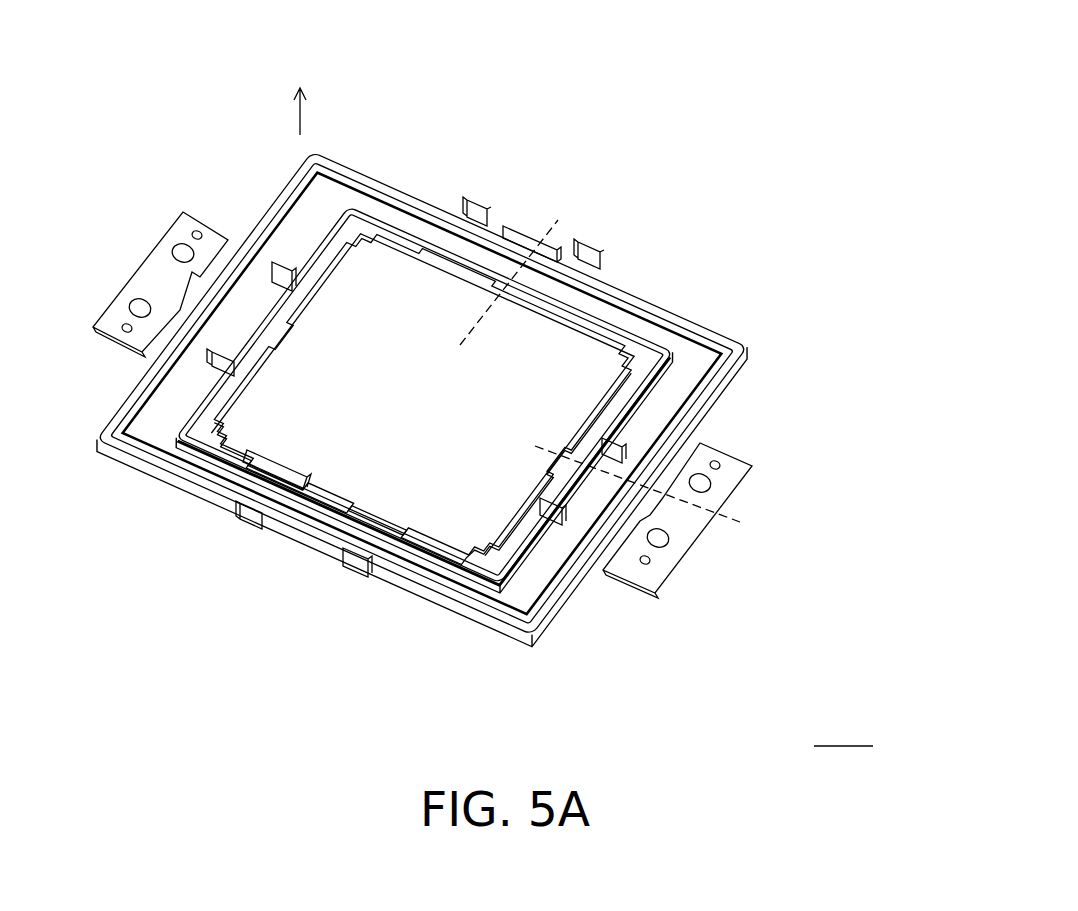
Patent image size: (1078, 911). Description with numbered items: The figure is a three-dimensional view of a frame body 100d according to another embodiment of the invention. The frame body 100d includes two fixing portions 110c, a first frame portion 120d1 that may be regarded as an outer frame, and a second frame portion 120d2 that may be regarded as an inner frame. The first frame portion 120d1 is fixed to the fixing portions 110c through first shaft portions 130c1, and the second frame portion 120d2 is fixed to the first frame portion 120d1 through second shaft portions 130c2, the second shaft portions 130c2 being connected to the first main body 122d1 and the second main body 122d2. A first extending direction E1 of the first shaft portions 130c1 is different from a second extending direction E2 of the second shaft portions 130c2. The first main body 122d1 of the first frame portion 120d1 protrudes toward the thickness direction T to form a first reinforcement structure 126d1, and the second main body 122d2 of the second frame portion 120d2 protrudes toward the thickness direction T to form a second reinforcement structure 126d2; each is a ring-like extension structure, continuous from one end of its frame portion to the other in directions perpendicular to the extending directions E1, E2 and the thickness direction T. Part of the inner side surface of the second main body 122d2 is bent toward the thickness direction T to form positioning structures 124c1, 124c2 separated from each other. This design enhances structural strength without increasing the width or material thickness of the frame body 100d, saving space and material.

The frame body 100d is at (843, 730).
The fixing portion 110c is at (162, 278).
The first frame portion 120d1 is at (517, 399).
The second frame portion 120d2 is at (424, 297).
The first main body 122d1 is at (753, 342).
The second main body 122d2 is at (353, 212).
The first reinforcement structure 126d1 is at (693, 327).
The second reinforcement structure 126d2 is at (402, 258).
The positioning structure 124c1 is at (420, 236).
The positioning structure 124c2 is at (610, 92).
The first shaft portion 130c1 is at (682, 450).
The second shaft portion 130c2 is at (560, 245).
The first extending direction E1 is at (652, 501).
The second extending direction E2 is at (516, 266).
The thickness direction T is at (298, 94).